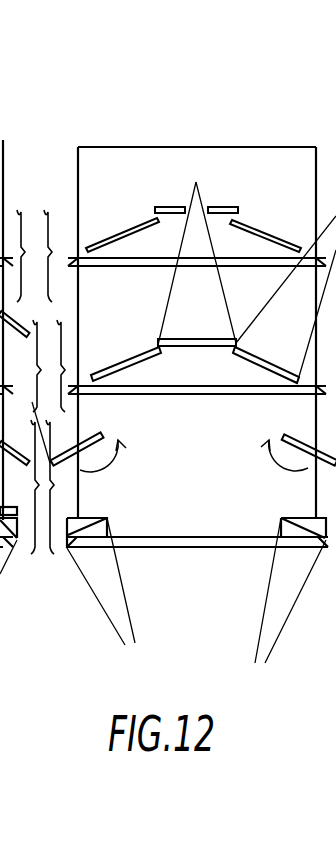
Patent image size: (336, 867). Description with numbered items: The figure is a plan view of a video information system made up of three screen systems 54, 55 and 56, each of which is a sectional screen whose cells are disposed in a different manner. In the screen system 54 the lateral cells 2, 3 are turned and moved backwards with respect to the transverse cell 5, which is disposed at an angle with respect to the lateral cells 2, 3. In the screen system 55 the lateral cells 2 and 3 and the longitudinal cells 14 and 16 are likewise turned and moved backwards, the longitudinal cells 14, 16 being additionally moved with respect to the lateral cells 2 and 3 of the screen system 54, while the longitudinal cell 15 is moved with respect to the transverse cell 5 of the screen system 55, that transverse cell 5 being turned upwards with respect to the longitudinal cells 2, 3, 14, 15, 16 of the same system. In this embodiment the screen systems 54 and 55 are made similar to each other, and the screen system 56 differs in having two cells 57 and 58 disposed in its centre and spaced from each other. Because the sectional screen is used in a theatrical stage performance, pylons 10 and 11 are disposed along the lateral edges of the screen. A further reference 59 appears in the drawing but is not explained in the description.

The left flap 2 is at (122, 229).
The right flap 3 is at (261, 231).
The shelf plate 5 is at (158, 267).
The left bottom block 10 is at (95, 518).
The right bottom block 11 is at (311, 518).
The left intermediate flap 14 is at (115, 367).
The central plate 15 is at (191, 339).
The right intermediate flap 16 is at (268, 360).
The lower strap 54 is at (42, 490).
The middle strap 55 is at (52, 322).
The upper strap 56 is at (91, 376).
The left stop tab 57 is at (168, 207).
The right stop tab 58 is at (225, 207).
The right strap 59 is at (286, 298).